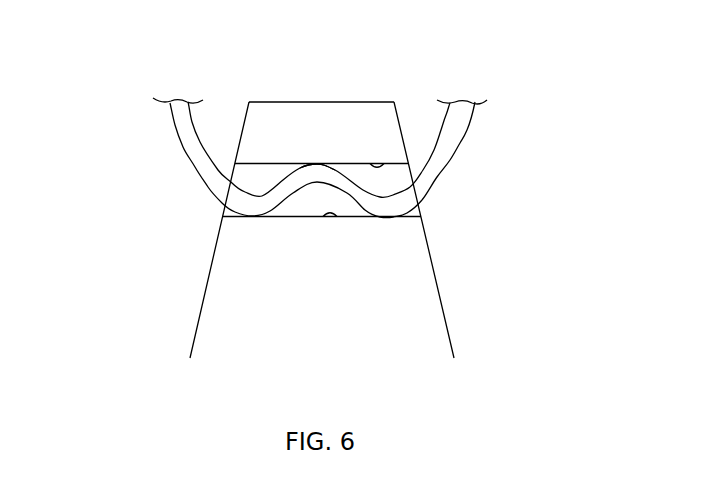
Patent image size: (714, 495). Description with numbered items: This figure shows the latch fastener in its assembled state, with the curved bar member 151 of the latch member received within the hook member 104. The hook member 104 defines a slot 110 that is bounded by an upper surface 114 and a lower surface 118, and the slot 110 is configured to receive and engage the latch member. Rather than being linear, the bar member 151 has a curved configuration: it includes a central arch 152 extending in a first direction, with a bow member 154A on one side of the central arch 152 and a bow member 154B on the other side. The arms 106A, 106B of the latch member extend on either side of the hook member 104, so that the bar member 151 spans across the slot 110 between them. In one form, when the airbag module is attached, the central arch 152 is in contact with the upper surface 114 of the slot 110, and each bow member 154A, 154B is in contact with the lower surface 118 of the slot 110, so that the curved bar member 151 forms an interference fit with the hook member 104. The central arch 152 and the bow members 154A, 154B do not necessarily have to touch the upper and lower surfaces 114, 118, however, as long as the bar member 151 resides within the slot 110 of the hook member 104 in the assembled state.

The hook member 104 is at (425, 312).
The arm 106A is at (178, 122).
The arm 106B is at (462, 120).
The slot 110 is at (386, 180).
The upper surface 114 is at (415, 177).
The lower surface 118 is at (323, 217).
The bar member 151 is at (230, 197).
The central arch 152 is at (325, 173).
The bow member 154A is at (257, 207).
The bow member 154B is at (390, 205).